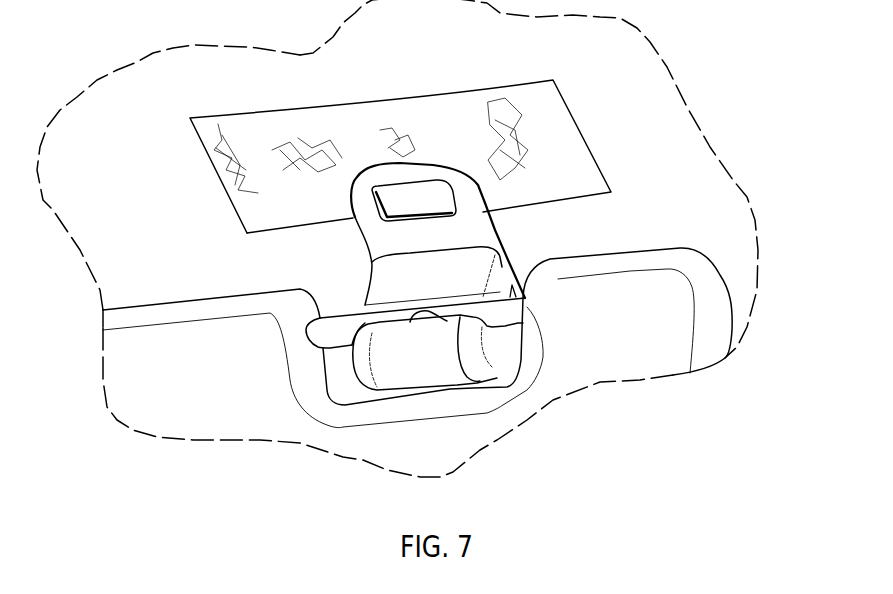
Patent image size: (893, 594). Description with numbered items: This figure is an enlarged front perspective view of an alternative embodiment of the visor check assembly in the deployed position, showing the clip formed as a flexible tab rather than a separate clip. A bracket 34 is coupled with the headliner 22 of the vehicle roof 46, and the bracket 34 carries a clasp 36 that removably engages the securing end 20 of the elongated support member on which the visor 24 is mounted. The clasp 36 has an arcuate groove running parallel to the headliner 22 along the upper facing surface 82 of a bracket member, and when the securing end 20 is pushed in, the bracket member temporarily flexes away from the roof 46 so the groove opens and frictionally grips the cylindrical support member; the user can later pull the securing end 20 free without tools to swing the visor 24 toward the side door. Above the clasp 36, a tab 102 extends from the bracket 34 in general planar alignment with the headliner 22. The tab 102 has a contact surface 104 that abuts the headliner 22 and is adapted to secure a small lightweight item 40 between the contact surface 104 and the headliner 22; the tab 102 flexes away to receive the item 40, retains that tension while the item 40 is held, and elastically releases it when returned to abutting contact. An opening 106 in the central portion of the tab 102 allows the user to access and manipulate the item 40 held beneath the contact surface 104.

The securing end 20 is at (330, 326).
The headliner 22 is at (151, 119).
The visor 24 is at (181, 399).
The bracket 34 is at (503, 368).
The clasp 36 is at (410, 322).
The small lightweight item 40 is at (217, 127).
The vehicle roof 46 is at (426, 33).
The upper facing surface 82 is at (453, 273).
The tab 102 is at (368, 217).
The contact surface 104 is at (363, 170).
The opening 106 is at (423, 197).